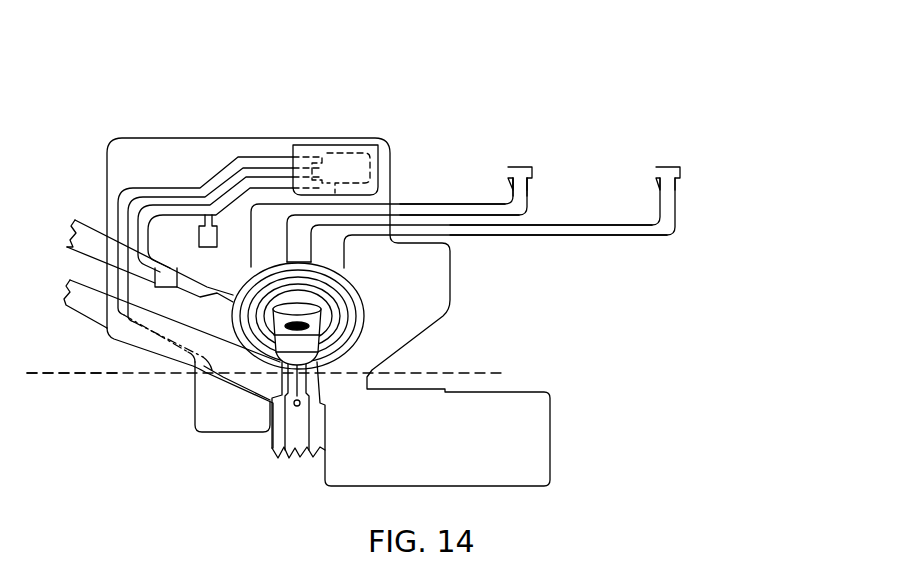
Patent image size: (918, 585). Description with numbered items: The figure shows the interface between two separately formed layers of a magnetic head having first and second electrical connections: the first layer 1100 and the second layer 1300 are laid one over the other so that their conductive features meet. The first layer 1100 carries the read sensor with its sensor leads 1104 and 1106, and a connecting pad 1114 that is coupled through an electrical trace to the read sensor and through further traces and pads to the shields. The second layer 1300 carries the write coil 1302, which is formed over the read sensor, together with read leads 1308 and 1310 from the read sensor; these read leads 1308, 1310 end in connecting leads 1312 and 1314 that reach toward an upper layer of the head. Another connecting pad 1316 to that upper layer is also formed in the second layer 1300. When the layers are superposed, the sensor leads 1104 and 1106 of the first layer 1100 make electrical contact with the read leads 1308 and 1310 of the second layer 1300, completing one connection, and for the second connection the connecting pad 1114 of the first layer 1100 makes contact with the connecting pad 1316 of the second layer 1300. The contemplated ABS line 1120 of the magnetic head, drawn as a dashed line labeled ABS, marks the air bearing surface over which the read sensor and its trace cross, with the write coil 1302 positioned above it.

The first layer 1100 is at (445, 68).
The second layer 1300 is at (615, 93).
The connecting pad 1114 is at (348, 158).
The connecting pad 1316 is at (368, 162).
The read lead 1308 is at (400, 212).
The read lead 1310 is at (537, 229).
The connecting lead 1312 is at (521, 172).
The connecting lead 1314 is at (674, 172).
The sensor lead 1104 is at (252, 273).
The sensor lead 1106 is at (340, 272).
The write coil 1302 is at (365, 302).
The ABS line 1120 is at (118, 372).